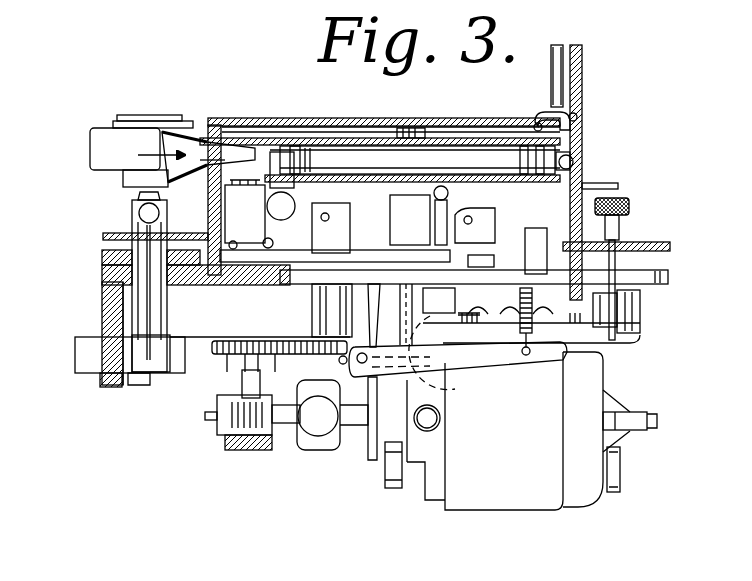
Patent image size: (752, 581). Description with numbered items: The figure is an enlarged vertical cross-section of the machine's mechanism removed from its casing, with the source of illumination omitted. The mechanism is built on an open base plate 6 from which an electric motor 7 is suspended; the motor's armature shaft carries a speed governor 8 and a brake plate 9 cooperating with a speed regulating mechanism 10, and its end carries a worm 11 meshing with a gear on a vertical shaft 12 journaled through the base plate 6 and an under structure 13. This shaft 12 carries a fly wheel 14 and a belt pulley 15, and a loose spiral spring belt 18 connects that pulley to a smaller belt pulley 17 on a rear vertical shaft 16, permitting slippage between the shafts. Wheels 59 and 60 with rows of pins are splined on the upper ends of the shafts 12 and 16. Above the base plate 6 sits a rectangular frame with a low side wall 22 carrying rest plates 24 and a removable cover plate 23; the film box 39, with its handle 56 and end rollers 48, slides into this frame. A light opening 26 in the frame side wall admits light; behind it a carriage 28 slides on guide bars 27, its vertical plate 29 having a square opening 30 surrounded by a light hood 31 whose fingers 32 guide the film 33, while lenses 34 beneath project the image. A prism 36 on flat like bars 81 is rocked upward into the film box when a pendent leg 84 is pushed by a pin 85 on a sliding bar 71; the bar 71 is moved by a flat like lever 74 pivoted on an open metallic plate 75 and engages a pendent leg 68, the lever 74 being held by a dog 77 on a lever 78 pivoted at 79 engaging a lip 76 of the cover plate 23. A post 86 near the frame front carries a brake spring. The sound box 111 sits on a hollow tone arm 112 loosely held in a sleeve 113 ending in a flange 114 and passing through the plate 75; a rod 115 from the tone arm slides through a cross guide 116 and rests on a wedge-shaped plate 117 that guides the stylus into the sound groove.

The base plate 6 is at (672, 278).
The electric motor 7 is at (548, 502).
The speed governor 8 is at (315, 440).
The brake plate 9 is at (372, 462).
The speed regulating mechanism 10 is at (507, 355).
The worm 11 is at (220, 434).
The vertical shaft 12 is at (226, 398).
The under structure 13 is at (243, 450).
The fly wheel 14 is at (212, 320).
The belt pulley 15 is at (230, 352).
The vertical shaft 16 is at (390, 302).
The belt pulley 17 is at (447, 388).
The spiral spring belt 18 is at (262, 342).
The side wall 22 is at (534, 241).
The cover plate 23 is at (241, 118).
The rest plates 24 is at (616, 186).
The light opening 26 is at (166, 134).
The guide bars 27 is at (264, 248).
The carriage 28 is at (222, 242).
The plate 29 is at (212, 134).
The opening 30 is at (205, 163).
The light hood 31 is at (255, 128).
The fingers 32 is at (280, 138).
The film 33 is at (325, 146).
The lenses 34 is at (292, 180).
The prism 36 is at (362, 140).
The film box 39 is at (490, 160).
The rollers 48 is at (428, 138).
The handle 56 is at (592, 163).
The wheel 59 is at (225, 206).
The wheel 60 is at (390, 212).
The pendent leg 68 is at (497, 215).
The bar 71 is at (632, 207).
The flat like lever 74 is at (582, 150).
The metallic plate 75 is at (102, 238).
The lip 76 is at (541, 112).
The dog 77 is at (534, 122).
The lever 78 is at (557, 45).
The pivot 79 is at (579, 116).
The flat like bars 81 is at (334, 186).
The pendent leg 84 is at (452, 220).
The pin 85 is at (494, 259).
The post 86 is at (501, 305).
The sound box 111 is at (95, 138).
The tone arm 112 is at (135, 215).
The sleeve 113 is at (125, 303).
The flange 114 is at (103, 255).
The rod 115 is at (100, 382).
The cross guide 116 is at (162, 373).
The wedge-shaped plate 117 is at (132, 378).